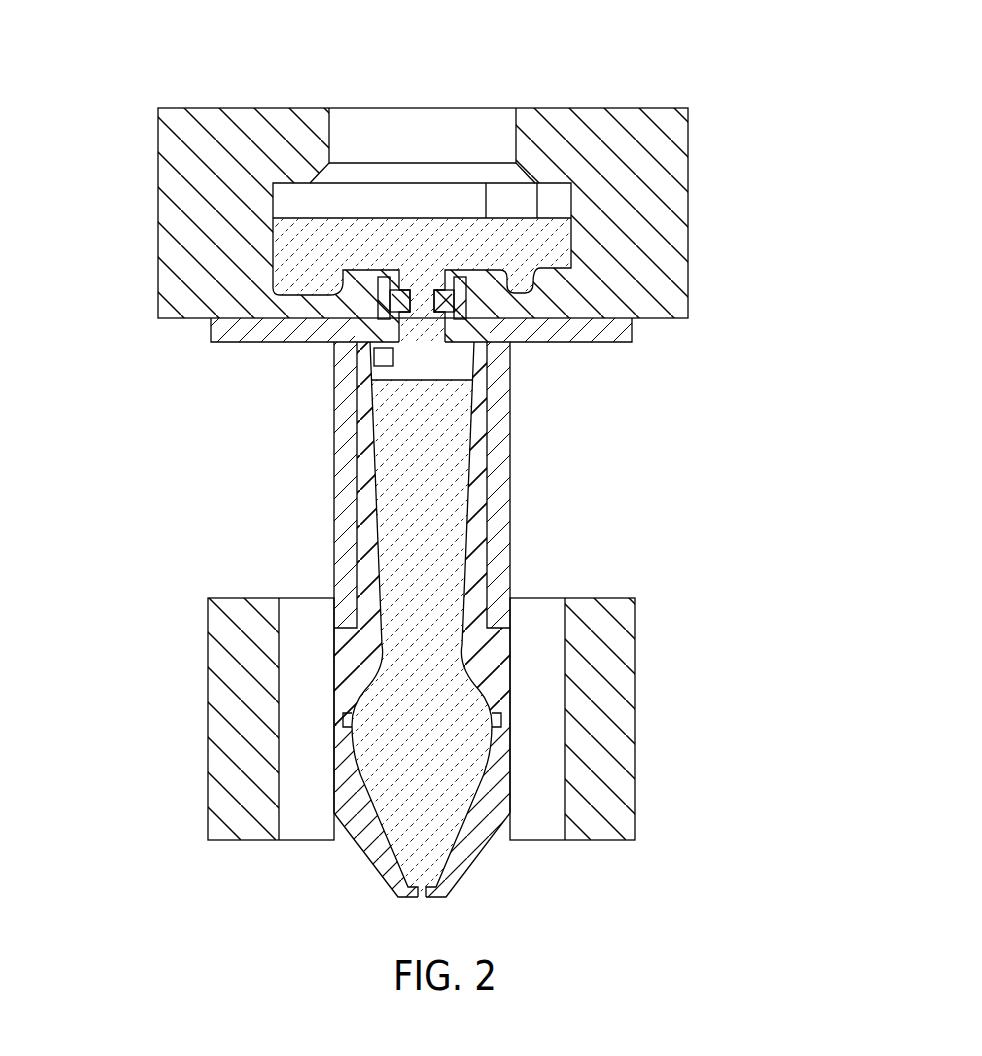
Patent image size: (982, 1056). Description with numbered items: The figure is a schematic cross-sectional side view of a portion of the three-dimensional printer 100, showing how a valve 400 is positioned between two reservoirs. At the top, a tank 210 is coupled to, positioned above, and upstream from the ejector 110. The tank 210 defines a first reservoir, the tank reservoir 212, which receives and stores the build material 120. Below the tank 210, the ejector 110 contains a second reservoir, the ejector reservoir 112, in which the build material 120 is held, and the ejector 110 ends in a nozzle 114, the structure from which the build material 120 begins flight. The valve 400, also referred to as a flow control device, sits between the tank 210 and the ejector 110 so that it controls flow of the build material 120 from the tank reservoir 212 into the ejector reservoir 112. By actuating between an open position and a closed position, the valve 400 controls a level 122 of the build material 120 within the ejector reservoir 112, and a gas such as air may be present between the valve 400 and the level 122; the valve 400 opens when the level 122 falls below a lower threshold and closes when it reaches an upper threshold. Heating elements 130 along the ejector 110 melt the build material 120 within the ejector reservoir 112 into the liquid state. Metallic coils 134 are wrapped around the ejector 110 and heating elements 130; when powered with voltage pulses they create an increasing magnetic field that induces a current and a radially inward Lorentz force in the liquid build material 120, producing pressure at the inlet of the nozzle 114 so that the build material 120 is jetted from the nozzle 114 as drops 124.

The 3D printer 100 is at (434, 468).
The tank 210 is at (708, 280).
The tank reservoir 212 is at (416, 128).
The build material 120 is at (438, 257).
The valve 400 is at (498, 325).
The ejector reservoir 112 is at (422, 640).
The level 122 is at (447, 374).
The drops 124 is at (372, 357).
The heating elements 130 is at (326, 398).
The ejector 110 is at (350, 508).
The nozzle 114 is at (346, 826).
The metallic coils 134 is at (190, 699).